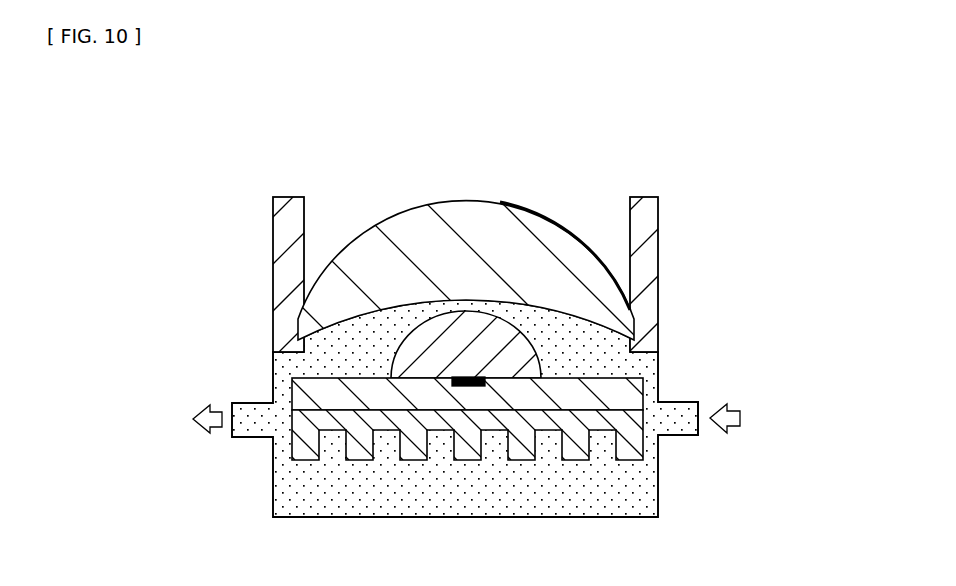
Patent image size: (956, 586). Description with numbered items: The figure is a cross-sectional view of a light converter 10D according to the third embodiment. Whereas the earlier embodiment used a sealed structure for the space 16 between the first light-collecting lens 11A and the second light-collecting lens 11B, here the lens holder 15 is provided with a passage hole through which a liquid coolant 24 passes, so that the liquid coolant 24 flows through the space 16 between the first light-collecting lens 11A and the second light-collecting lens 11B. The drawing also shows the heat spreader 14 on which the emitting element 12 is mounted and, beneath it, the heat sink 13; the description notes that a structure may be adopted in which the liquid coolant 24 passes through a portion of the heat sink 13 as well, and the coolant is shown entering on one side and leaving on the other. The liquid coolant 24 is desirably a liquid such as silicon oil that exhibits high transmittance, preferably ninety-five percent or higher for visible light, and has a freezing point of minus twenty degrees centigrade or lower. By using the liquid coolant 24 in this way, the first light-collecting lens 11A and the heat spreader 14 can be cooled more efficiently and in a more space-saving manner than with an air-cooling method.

The light converter 10D is at (284, 139).
The first light-collecting lens 11A is at (513, 343).
The second light-collecting lens 11B is at (533, 248).
The light emitting element 12 is at (469, 388).
The heat sink 13 is at (410, 440).
The heat spreader 14 is at (292, 393).
The lens holder 15 is at (285, 258).
The space 16 is at (583, 358).
The liquid coolant 24 is at (684, 436).